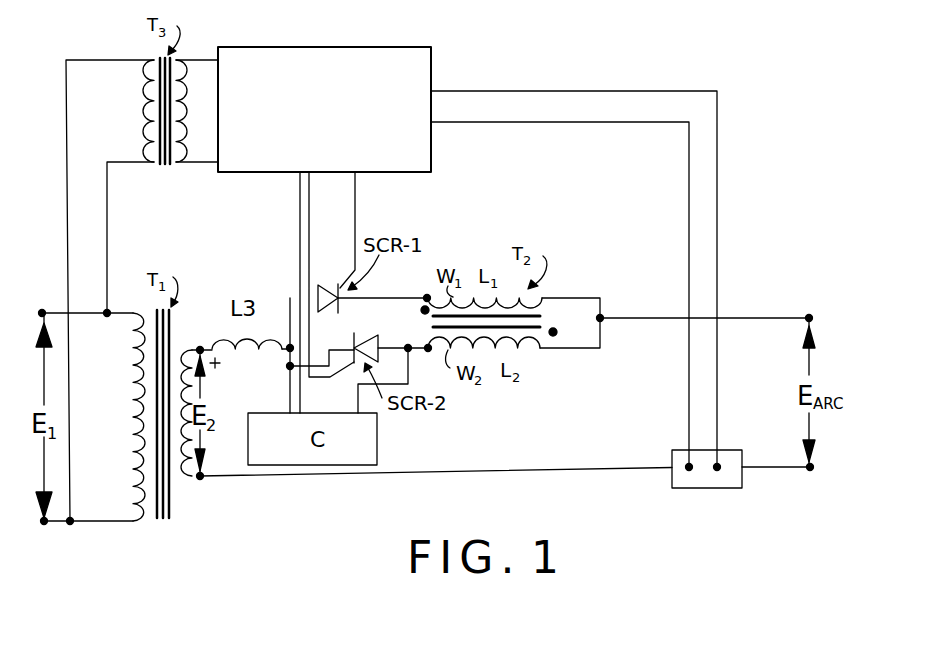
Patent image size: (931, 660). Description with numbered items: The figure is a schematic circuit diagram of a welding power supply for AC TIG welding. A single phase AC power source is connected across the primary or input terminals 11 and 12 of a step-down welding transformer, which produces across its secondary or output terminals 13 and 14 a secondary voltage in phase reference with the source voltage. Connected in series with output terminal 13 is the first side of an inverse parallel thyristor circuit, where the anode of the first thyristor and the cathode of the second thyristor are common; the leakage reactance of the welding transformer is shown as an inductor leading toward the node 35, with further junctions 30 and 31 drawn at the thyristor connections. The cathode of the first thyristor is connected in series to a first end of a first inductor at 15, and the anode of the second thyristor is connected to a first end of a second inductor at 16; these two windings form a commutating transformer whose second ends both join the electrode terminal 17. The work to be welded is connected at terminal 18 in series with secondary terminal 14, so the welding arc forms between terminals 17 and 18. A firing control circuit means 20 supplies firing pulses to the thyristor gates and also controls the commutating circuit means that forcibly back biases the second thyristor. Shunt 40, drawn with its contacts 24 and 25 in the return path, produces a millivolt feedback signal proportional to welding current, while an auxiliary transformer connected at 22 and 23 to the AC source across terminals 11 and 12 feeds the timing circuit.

The primary terminal 11 is at (42, 310).
The primary terminal 12 is at (44, 523).
The secondary terminal 13 is at (200, 347).
The secondary terminal 14 is at (201, 478).
The connection point of SCR-1 cathode and first inductor 15 is at (426, 295).
The connection point of SCR-2 anode and second inductor 16 is at (427, 351).
The electrode terminal 17 is at (809, 315).
The work terminal 18 is at (810, 469).
The firing control circuit means 20 is at (383, 47).
The transformer T3 connection 22 is at (106, 311).
The transformer T3 connection 23 is at (71, 519).
The switch contact 24 is at (719, 471).
The switch contact 25 is at (688, 471).
The junction 30 is at (289, 369).
The junction 31 is at (412, 322).
The circuit node 35 is at (289, 351).
The shunt 40 is at (712, 499).